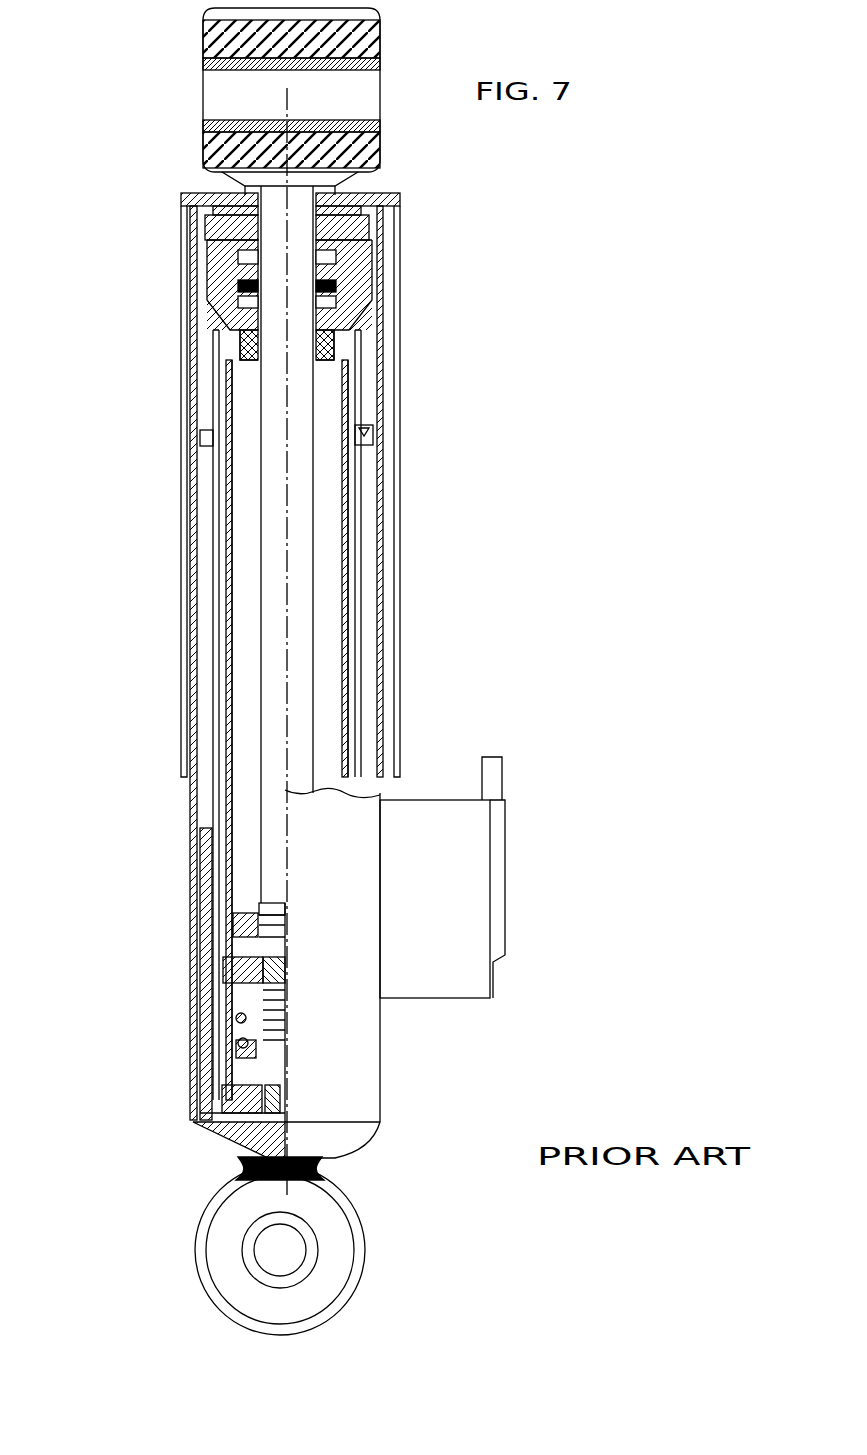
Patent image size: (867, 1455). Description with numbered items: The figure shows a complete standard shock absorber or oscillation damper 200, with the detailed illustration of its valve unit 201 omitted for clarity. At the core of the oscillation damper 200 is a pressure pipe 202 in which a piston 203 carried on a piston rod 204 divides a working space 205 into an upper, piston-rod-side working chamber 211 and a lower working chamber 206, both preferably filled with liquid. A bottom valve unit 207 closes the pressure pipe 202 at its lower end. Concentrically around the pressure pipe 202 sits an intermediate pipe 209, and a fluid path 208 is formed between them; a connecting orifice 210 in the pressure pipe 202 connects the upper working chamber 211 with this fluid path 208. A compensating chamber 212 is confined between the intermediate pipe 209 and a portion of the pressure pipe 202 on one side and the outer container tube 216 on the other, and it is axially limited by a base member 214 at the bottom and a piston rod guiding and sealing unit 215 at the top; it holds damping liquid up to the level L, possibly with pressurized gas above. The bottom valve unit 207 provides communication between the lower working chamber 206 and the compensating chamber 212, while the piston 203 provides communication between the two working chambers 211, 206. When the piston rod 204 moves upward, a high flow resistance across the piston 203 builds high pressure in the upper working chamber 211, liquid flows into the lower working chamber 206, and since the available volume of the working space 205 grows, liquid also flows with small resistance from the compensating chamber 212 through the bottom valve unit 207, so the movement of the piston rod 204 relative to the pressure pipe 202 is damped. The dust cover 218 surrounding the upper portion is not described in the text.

The oscillation damper 200 is at (145, 655).
The valve unit 201 is at (445, 793).
The pressure pipe 202 is at (352, 607).
The piston 203 is at (225, 995).
The piston rod 204 is at (300, 488).
The working space 205 is at (240, 462).
The lower working chamber 206 is at (225, 1066).
The bottom valve unit 207 is at (222, 1110).
The fluid path 208 is at (352, 642).
The intermediate pipe 209 is at (348, 690).
The connecting orifice 210 is at (348, 407).
The upper working chamber 211 is at (240, 568).
The compensating chamber 212 is at (365, 568).
The base member 214 is at (195, 1128).
The piston rod guiding and sealing unit 215 is at (372, 297).
The container tube 216 is at (385, 530).
The dust cover 218 is at (192, 195).